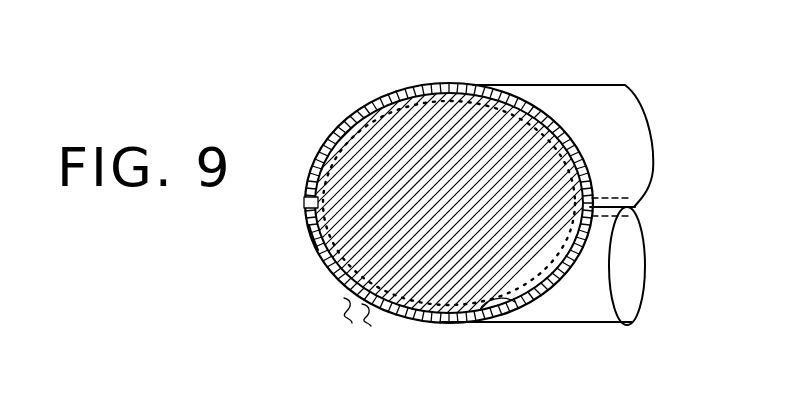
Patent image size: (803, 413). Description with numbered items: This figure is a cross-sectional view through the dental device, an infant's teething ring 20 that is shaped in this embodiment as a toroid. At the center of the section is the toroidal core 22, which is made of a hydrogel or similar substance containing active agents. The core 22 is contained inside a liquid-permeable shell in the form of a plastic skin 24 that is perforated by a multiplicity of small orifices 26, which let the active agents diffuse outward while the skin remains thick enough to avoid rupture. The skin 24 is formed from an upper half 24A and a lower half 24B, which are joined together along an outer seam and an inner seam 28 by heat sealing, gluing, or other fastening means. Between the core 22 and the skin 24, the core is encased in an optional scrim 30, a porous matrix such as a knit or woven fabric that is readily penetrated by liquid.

The teething ring 20 is at (619, 85).
The toroidal core 22 is at (373, 148).
The plastic skin 24 is at (388, 100).
The upper half 24A is at (352, 117).
The lower half 24B is at (318, 250).
The orifices 26 is at (310, 202).
The inner seam 28 is at (598, 210).
The scrim 30 is at (456, 322).